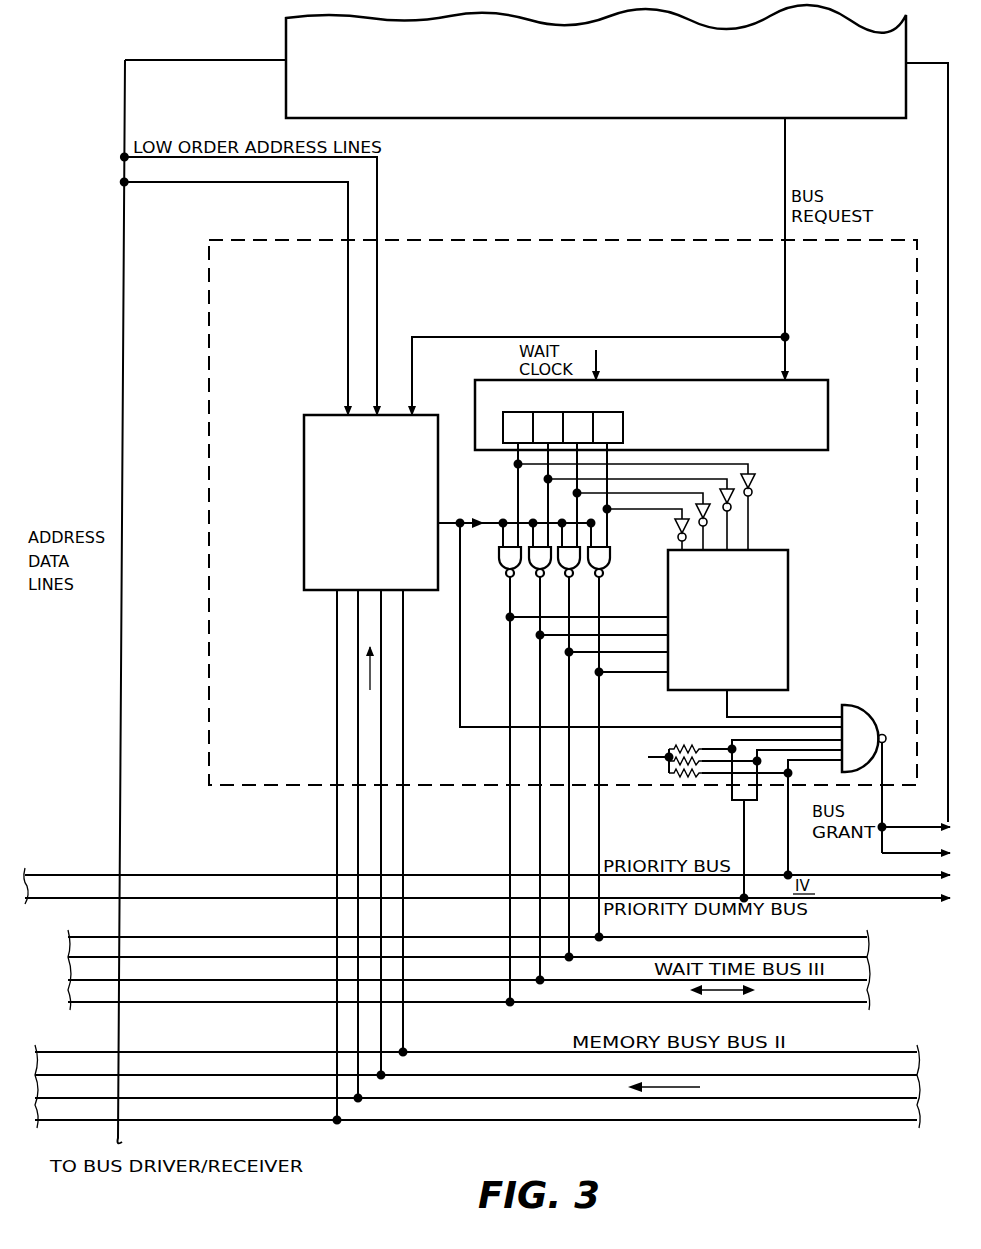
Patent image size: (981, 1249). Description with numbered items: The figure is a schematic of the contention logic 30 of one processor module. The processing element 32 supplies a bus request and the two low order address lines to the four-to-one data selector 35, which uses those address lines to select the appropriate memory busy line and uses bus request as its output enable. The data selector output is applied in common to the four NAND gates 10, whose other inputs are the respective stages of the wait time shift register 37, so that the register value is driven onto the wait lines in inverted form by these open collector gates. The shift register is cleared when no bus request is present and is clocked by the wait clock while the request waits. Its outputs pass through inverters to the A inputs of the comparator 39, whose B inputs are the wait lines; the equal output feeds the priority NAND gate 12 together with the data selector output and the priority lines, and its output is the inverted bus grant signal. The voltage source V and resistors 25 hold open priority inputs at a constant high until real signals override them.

The processing element 32 is at (585, 84).
The contention logic 30 is at (545, 287).
The four-to-one data selector 35 is at (357, 568).
The wait time shift register 37 is at (669, 439).
The comparator 39 is at (714, 670).
The NAND gates 10 is at (596, 581).
The priority NAND gate 12 is at (852, 705).
The resistors 25 is at (681, 745).